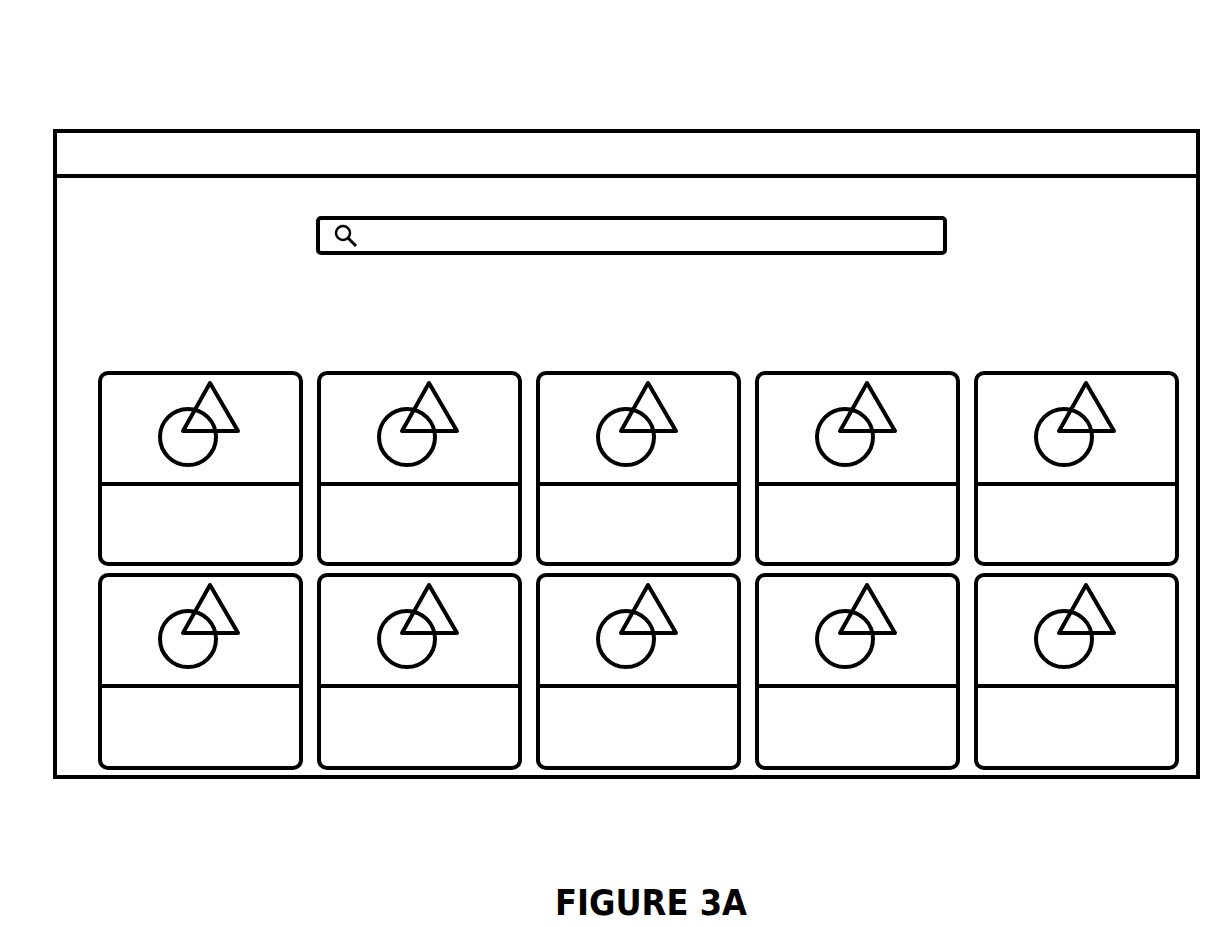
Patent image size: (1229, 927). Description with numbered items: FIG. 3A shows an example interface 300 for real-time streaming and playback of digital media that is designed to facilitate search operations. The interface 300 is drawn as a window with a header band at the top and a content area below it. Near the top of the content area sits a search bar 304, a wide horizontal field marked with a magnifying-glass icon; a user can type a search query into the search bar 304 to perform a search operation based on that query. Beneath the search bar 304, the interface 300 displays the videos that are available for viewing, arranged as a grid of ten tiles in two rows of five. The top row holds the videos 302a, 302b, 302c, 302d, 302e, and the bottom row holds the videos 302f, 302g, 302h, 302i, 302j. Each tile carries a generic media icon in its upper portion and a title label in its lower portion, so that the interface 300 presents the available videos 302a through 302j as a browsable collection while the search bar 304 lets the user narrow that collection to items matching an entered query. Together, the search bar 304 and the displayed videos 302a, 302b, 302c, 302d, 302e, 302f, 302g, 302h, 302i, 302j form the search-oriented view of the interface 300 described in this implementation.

The interface 300 is at (136, 42).
The search bar 304 is at (714, 211).
The video 302a is at (195, 370).
The video 302b is at (420, 370).
The video 302c is at (650, 370).
The video 302d is at (878, 370).
The video 302e is at (1108, 370).
The video 302f is at (184, 772).
The video 302g is at (400, 772).
The video 302h is at (620, 772).
The video 302i is at (838, 772).
The video 302j is at (1059, 772).